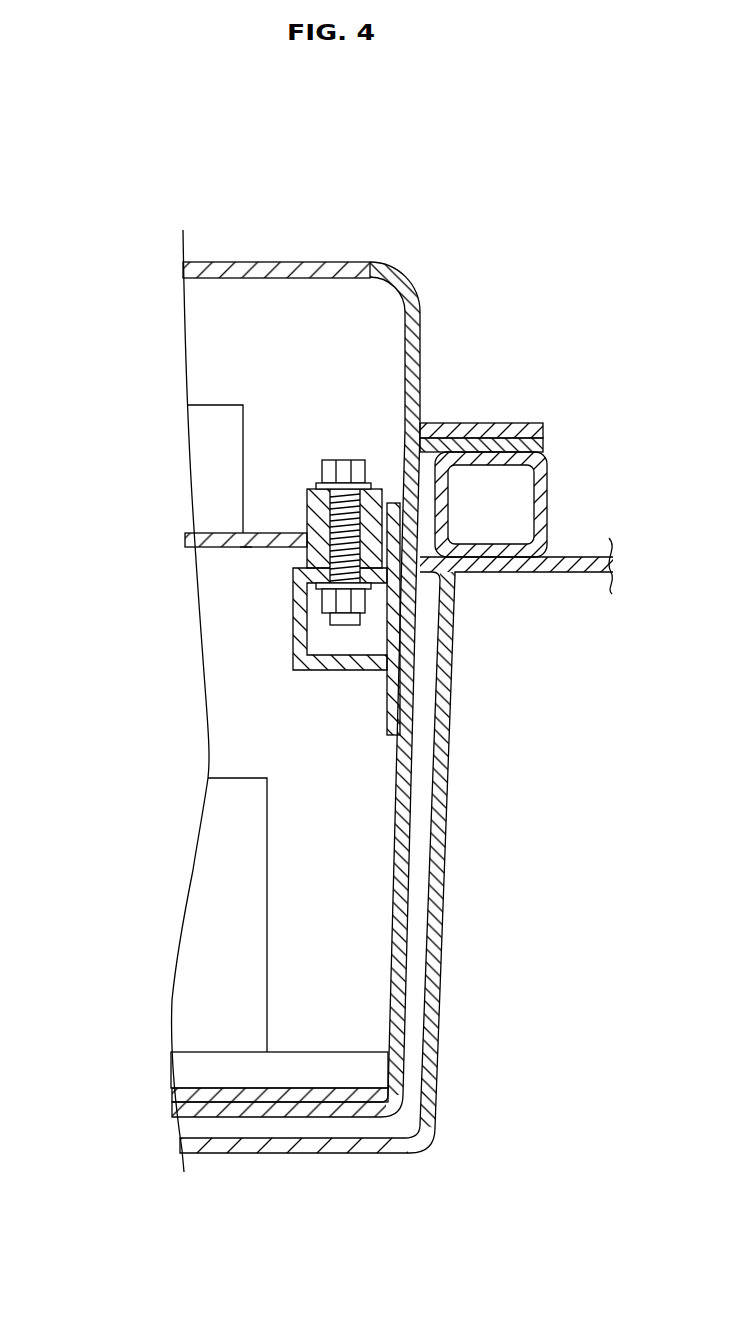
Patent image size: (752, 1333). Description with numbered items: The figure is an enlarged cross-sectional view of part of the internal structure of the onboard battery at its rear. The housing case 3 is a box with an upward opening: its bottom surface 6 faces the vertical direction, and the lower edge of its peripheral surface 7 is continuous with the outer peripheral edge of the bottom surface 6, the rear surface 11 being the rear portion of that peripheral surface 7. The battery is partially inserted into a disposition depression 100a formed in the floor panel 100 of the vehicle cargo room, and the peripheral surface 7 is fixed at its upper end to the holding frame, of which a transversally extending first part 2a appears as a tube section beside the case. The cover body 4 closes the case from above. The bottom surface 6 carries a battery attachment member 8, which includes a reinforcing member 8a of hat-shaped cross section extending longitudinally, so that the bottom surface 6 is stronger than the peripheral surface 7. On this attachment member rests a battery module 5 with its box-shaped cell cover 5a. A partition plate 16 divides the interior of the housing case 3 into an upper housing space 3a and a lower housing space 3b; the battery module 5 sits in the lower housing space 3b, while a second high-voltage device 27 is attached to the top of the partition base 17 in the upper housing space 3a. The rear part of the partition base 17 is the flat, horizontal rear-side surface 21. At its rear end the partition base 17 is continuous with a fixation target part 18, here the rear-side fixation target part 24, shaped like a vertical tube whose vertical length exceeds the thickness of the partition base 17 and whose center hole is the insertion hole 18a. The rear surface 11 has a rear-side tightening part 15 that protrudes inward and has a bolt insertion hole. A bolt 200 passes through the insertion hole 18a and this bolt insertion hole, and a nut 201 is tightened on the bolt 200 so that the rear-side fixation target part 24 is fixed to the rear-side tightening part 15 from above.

The first part 2a is at (547, 478).
The housing case 3 is at (405, 967).
The upper housing space 3a is at (297, 344).
The lower housing space 3b is at (275, 722).
The cover body 4 is at (258, 262).
The battery module 5 is at (203, 910).
The cell cover 5a is at (195, 978).
The bottom surface 6 is at (243, 1135).
The peripheral surface 7 is at (410, 773).
The battery attachment member 8 is at (178, 1065).
The reinforcing member 8a is at (180, 1080).
The rear surface 11 is at (410, 800).
The rear-side tightening part 15 is at (293, 605).
The partition plate 16 is at (220, 545).
The partition base 17 is at (247, 548).
The fixation target part 18 is at (504, 352).
The rear-side fixation target part 24 is at (481, 445).
The insertion hole 18a is at (360, 460).
The rear-side surface 21 is at (260, 533).
The second high-voltage device 27 is at (190, 448).
The floor panel 100 is at (437, 868).
The disposition depression 100a is at (295, 1137).
The bolt 200 is at (393, 503).
The nut 201 is at (360, 598).